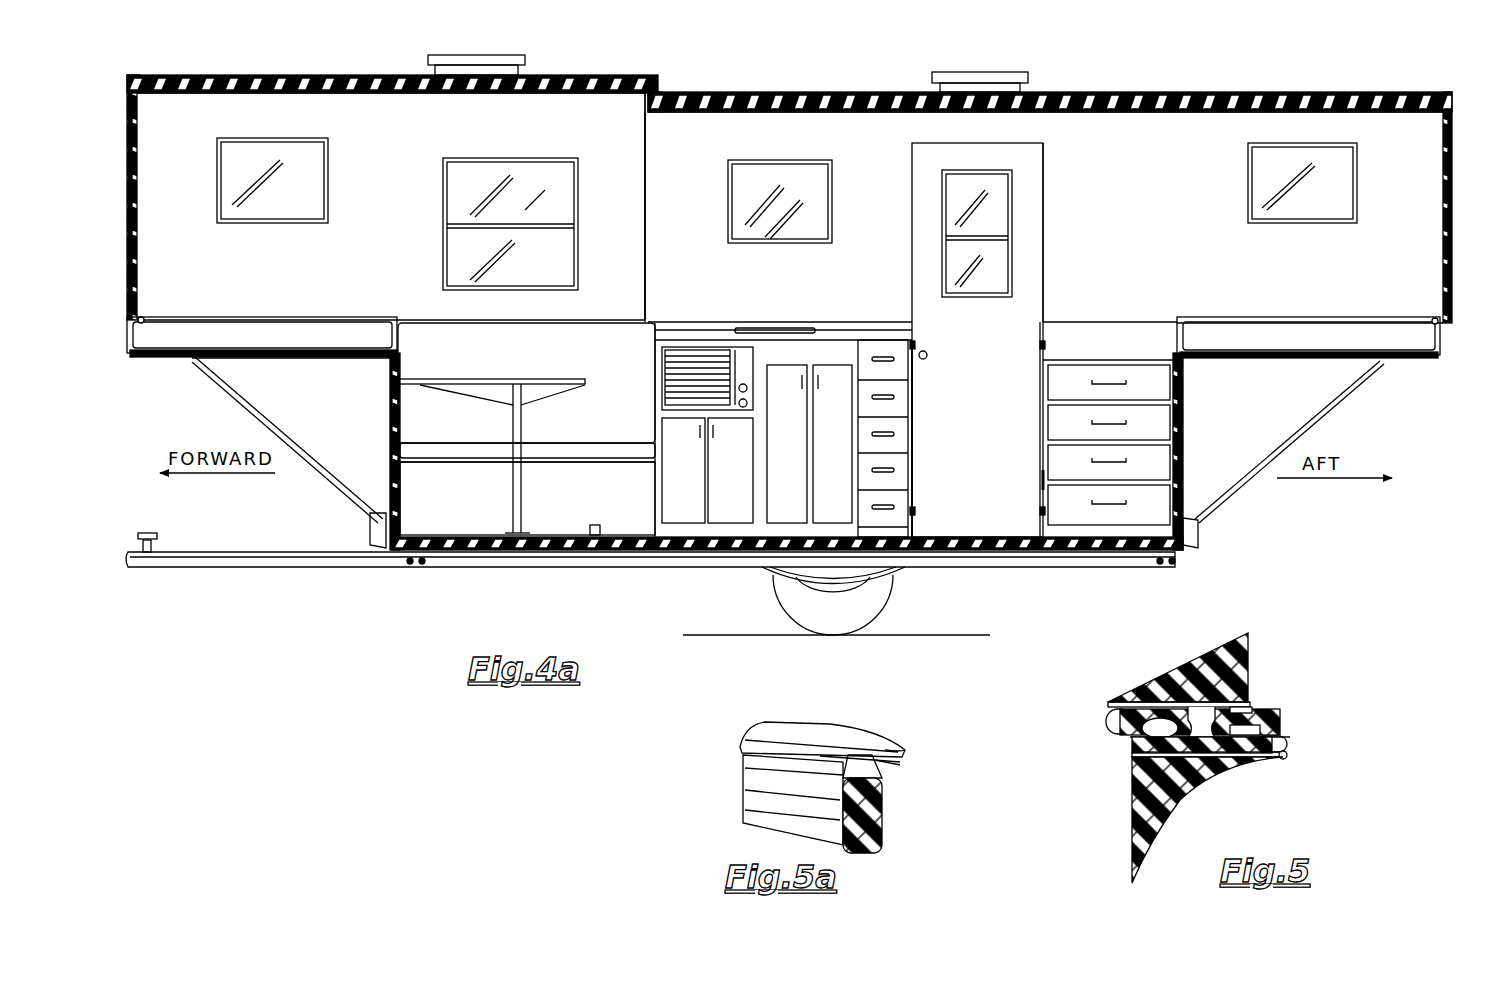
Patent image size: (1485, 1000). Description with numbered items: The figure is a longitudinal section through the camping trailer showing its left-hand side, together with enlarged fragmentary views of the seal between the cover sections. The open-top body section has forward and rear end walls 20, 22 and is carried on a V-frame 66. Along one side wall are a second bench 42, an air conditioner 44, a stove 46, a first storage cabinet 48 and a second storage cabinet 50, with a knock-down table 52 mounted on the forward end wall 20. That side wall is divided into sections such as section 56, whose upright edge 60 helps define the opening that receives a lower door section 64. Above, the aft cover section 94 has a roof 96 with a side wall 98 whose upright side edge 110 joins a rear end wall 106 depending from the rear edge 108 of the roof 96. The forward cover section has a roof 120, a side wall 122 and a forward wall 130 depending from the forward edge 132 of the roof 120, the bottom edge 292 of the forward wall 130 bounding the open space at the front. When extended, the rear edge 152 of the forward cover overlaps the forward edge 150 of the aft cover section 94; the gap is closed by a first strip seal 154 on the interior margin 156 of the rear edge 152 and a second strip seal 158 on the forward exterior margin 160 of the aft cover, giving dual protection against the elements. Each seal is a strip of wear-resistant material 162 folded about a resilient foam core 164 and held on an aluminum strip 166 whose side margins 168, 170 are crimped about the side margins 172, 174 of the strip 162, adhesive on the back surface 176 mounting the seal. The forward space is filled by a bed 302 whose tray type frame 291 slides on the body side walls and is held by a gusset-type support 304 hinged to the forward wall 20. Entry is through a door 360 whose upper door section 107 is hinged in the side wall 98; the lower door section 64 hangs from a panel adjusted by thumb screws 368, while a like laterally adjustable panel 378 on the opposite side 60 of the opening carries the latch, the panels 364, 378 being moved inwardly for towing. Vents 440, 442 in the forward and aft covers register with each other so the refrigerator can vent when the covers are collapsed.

In FIG. 4A, the forward end wall 20 is at (392, 411).
In FIG. 4A, the rear end wall 22 is at (1185, 463).
In FIG. 4A, the second bench 42 is at (567, 461).
In FIG. 4A, the air conditioner 44 is at (699, 356).
In FIG. 4A, the stove 46 is at (771, 329).
In FIG. 4A, the first storage cabinet 48 is at (757, 444).
In FIG. 4A, the second storage cabinet 50 is at (1060, 380).
In FIG. 4A, the knock-down table 52 is at (495, 378).
In FIG. 4A, the side wall section 56 is at (877, 329).
In FIG. 4A, the upright edge 60 is at (918, 336).
In FIG. 4A, the lower door section 64 is at (977, 340).
In FIG. 4A, the V-frame 66 is at (360, 553).
In FIG. 4A, the aft cover section 94 is at (1246, 94).
In FIG. 4A, the roof 96 is at (1152, 94).
In FIG. 4A, the side wall 98 is at (1002, 232).
In FIG. 4A, the rear end wall 106 is at (1440, 240).
In FIG. 4A, the upper door section 107 is at (1032, 204).
In FIG. 4A, the rear edge 108 is at (1445, 92).
In FIG. 4A, the upright side edge 110 is at (1440, 130).
In FIG. 4A, the roof 120 is at (306, 80).
In FIG. 4A, the side wall 122 is at (391, 206).
In FIG. 4A, the forward wall 130 is at (139, 252).
In FIG. 4A, the forward edge 132 is at (146, 80).
In FIG. 4A, the forward edge 150 is at (652, 112).
In FIG. 5, the forward edge 150 is at (1208, 790).
In FIG. 4A, the rear edge 152 is at (653, 78).
In FIG. 5, the rear edge 152 is at (1242, 657).
In FIG. 5, the first strip seal 154 is at (1282, 740).
In FIG. 5, the interior margin 156 is at (1240, 703).
In FIG. 5, the second strip seal 158 is at (1108, 728).
In FIG. 5, the forward exterior margin 160 is at (1160, 754).
In FIG. 5, the wear resistant material strip 162 is at (1285, 752).
In FIG. 5A, the resilient vinyl foam core 164 is at (880, 845).
In FIG. 5, the resilient vinyl foam core 164 is at (1284, 760).
In FIG. 5A, the aluminum strip 166 is at (862, 730).
In FIG. 5, the aluminum strip 166 is at (1258, 718).
In FIG. 5A, the side margin 168 is at (882, 762).
In FIG. 5, the side margin 168 is at (1262, 720).
In FIG. 5A, the side margin 170 is at (833, 764).
In FIG. 5, the side margin 170 is at (1185, 712).
In FIG. 5A, the side margin 172 is at (895, 748).
In FIG. 5, the side margin 172 is at (1250, 706).
In FIG. 5A, the side margin 174 is at (845, 755).
In FIG. 5, the side margin 174 is at (1203, 712).
In FIG. 5A, the back surface 176 is at (786, 728).
In FIG. 4A, the tray type frame 291 is at (1263, 328).
In FIG. 4A, the bottom edge 292 is at (262, 375).
In FIG. 4A, the bed 302 is at (274, 330).
In FIG. 4A, the gusset-type support 304 is at (336, 491).
In FIG. 4A, the door 360 is at (1048, 283).
In FIG. 4A, the panel 364 is at (1040, 480).
In FIG. 4A, the thumb screw 368 is at (1040, 338).
In FIG. 4A, the laterally adjustable panel 378 is at (916, 405).
In FIG. 4A, the vent 440 is at (470, 57).
In FIG. 4A, the vent 442 is at (1018, 72).